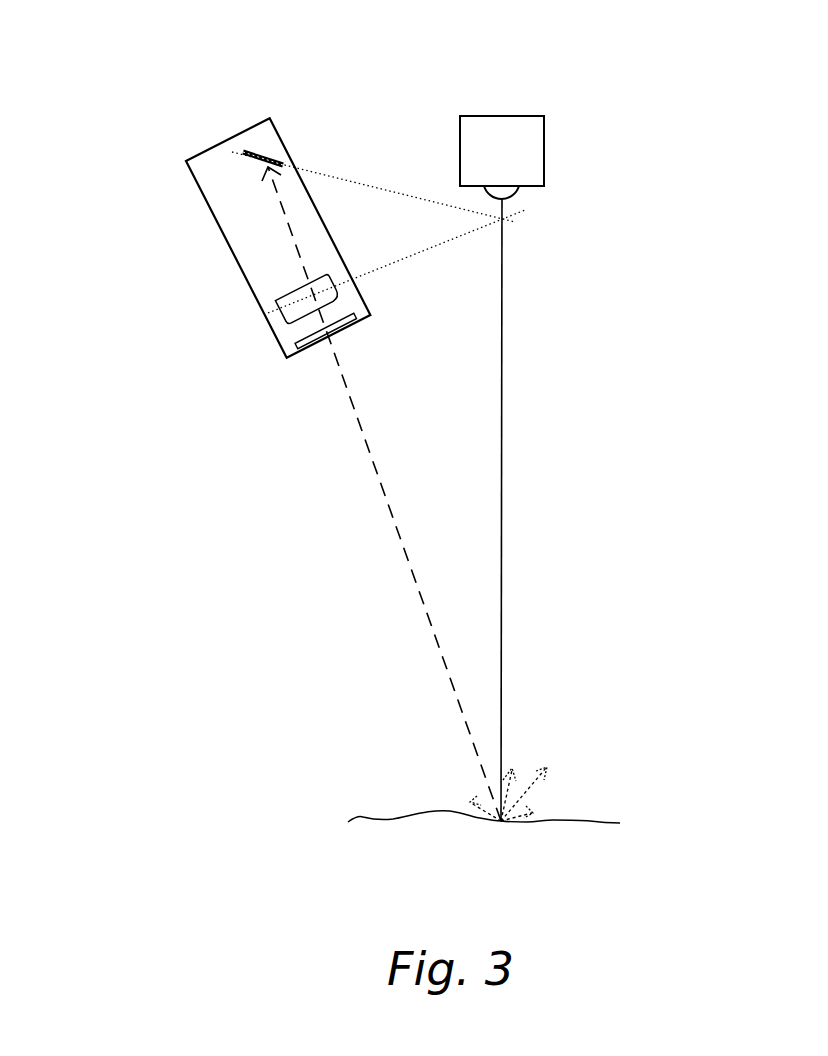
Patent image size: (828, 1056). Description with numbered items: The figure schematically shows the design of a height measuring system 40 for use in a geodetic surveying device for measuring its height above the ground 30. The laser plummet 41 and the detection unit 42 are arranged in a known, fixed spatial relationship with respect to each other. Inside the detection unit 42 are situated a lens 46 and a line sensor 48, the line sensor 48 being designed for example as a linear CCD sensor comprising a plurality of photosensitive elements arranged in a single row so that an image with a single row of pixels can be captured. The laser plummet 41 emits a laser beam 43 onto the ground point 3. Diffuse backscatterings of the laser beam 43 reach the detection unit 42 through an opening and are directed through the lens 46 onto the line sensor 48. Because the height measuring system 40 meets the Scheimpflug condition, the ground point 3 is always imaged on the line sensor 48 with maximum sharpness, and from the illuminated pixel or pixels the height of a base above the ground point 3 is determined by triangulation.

The height measuring system 40 is at (347, 72).
The laser plummet 41 is at (534, 157).
The detection unit 42 is at (242, 234).
The laser beam 43 is at (547, 510).
The lens 46 is at (258, 296).
The line sensor 48 is at (210, 179).
The ground point 3 is at (475, 818).
The ground 30 is at (488, 804).